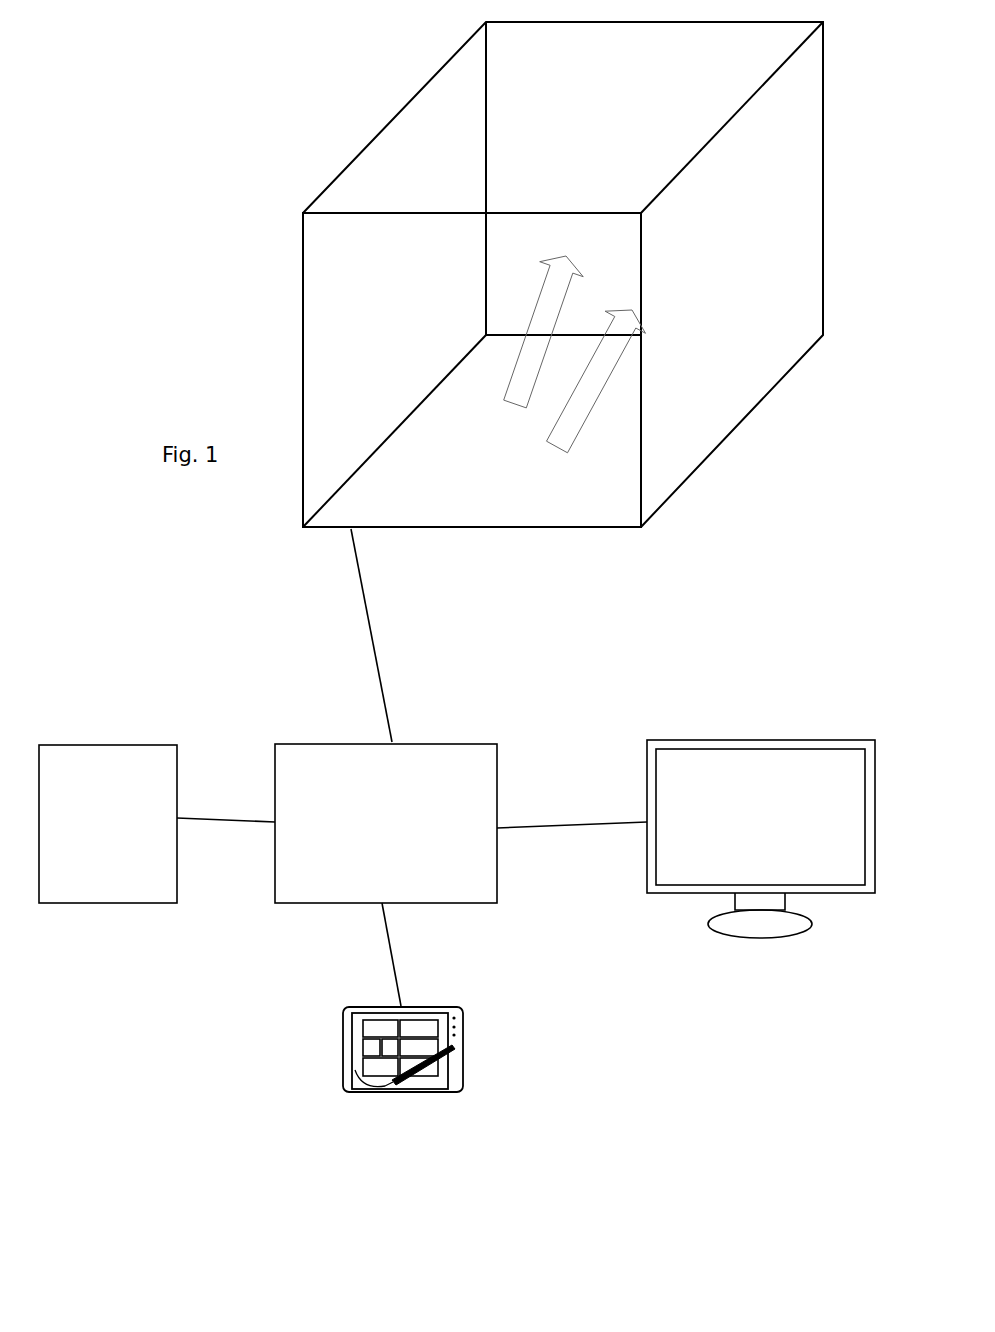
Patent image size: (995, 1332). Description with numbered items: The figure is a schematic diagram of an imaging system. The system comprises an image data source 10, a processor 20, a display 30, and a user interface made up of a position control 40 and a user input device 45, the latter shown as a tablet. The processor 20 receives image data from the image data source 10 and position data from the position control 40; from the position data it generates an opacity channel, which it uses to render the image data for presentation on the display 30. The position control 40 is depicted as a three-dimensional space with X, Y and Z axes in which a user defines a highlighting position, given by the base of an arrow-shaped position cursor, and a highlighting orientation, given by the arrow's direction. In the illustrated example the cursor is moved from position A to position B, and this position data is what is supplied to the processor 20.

The image data source 10 is at (102, 803).
The processor 20 is at (462, 852).
The display 30 is at (757, 817).
The position control 40 is at (441, 155).
The user input device 45 is at (436, 1075).
The position A is at (580, 400).
The position B is at (518, 390).